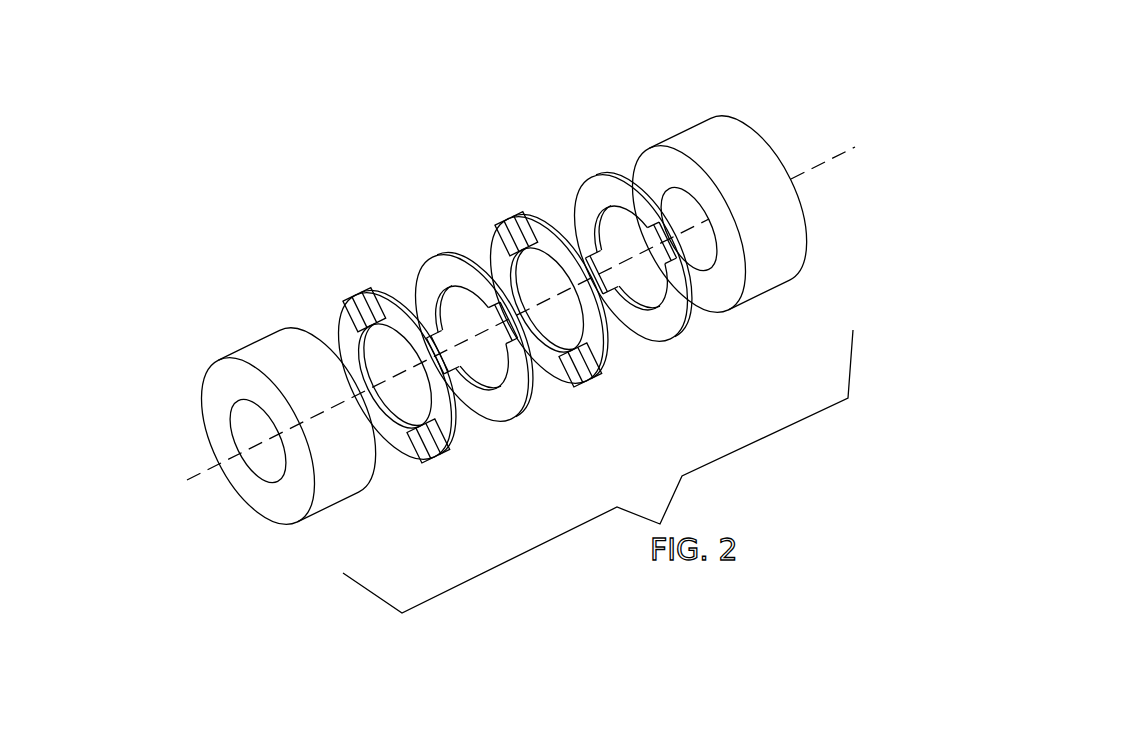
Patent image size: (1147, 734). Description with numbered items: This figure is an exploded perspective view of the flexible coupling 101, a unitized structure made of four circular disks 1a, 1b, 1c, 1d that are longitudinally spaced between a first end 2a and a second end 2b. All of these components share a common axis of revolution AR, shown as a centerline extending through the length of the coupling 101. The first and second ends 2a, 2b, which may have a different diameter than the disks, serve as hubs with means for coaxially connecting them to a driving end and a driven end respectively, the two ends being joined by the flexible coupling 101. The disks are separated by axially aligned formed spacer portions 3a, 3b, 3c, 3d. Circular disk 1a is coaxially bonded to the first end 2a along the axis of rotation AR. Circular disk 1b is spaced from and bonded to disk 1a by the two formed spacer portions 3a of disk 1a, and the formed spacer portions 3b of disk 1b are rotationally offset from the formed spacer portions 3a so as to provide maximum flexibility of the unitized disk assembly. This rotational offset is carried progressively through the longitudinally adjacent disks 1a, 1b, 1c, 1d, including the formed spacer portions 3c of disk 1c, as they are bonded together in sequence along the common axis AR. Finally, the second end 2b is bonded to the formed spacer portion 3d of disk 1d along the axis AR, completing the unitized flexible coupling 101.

The flexible coupling 101 is at (503, 279).
The circular disk 1a is at (588, 173).
The circular disk 1b is at (600, 375).
The circular disk 1c is at (435, 250).
The circular disk 1d is at (452, 452).
The first end 2a is at (725, 143).
The second end 2b is at (218, 397).
The formed spacer portions 3a is at (583, 250).
The formed spacer portions 3b is at (507, 223).
The formed spacer portions 3c is at (437, 345).
The formed spacer portion 3d is at (352, 300).
The axis of revolution AR is at (208, 468).